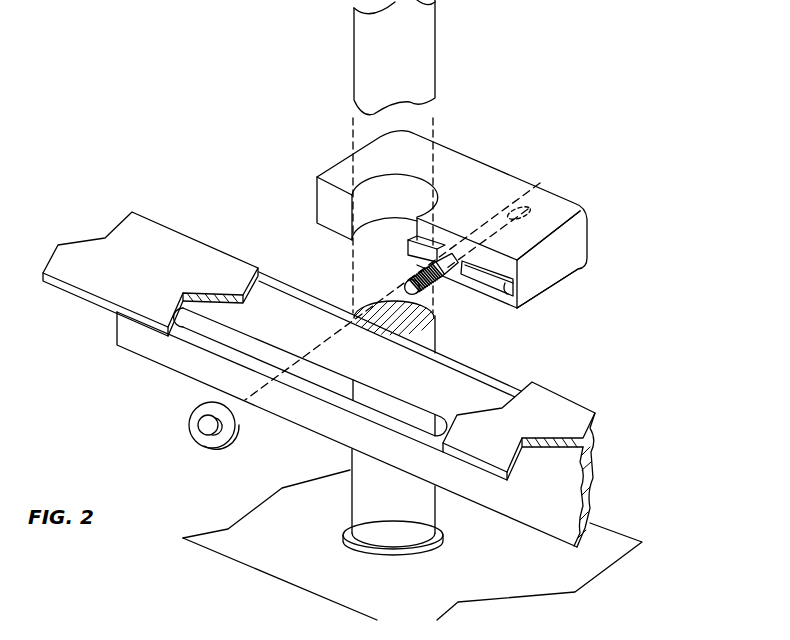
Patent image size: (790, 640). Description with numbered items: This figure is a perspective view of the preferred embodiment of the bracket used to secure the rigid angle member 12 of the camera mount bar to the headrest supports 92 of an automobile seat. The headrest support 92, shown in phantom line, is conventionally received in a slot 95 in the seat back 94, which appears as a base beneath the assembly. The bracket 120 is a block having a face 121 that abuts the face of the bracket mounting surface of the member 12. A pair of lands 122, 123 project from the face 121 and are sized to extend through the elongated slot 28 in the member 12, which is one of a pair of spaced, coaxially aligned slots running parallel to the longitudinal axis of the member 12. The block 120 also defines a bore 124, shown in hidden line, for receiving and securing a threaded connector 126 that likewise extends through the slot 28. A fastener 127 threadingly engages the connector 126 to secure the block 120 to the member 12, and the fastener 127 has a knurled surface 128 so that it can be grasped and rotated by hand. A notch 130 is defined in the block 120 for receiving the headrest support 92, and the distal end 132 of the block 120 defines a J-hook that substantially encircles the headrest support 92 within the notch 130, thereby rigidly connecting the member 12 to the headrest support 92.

The elongate member 12 is at (135, 230).
The elongated slot 28 is at (330, 393).
The headrest support 92 is at (370, 58).
The seat back 94 is at (497, 581).
The slot 95 is at (347, 547).
The bracket 120 is at (457, 232).
The face 121 is at (522, 268).
The land 122 is at (430, 240).
The land 123 is at (524, 304).
The bore 124 is at (540, 183).
The threaded connector 126 is at (454, 268).
The fastener 127 is at (200, 440).
The knurled surface 128 is at (210, 403).
The notch 130 is at (398, 263).
The distal end 132 is at (340, 219).